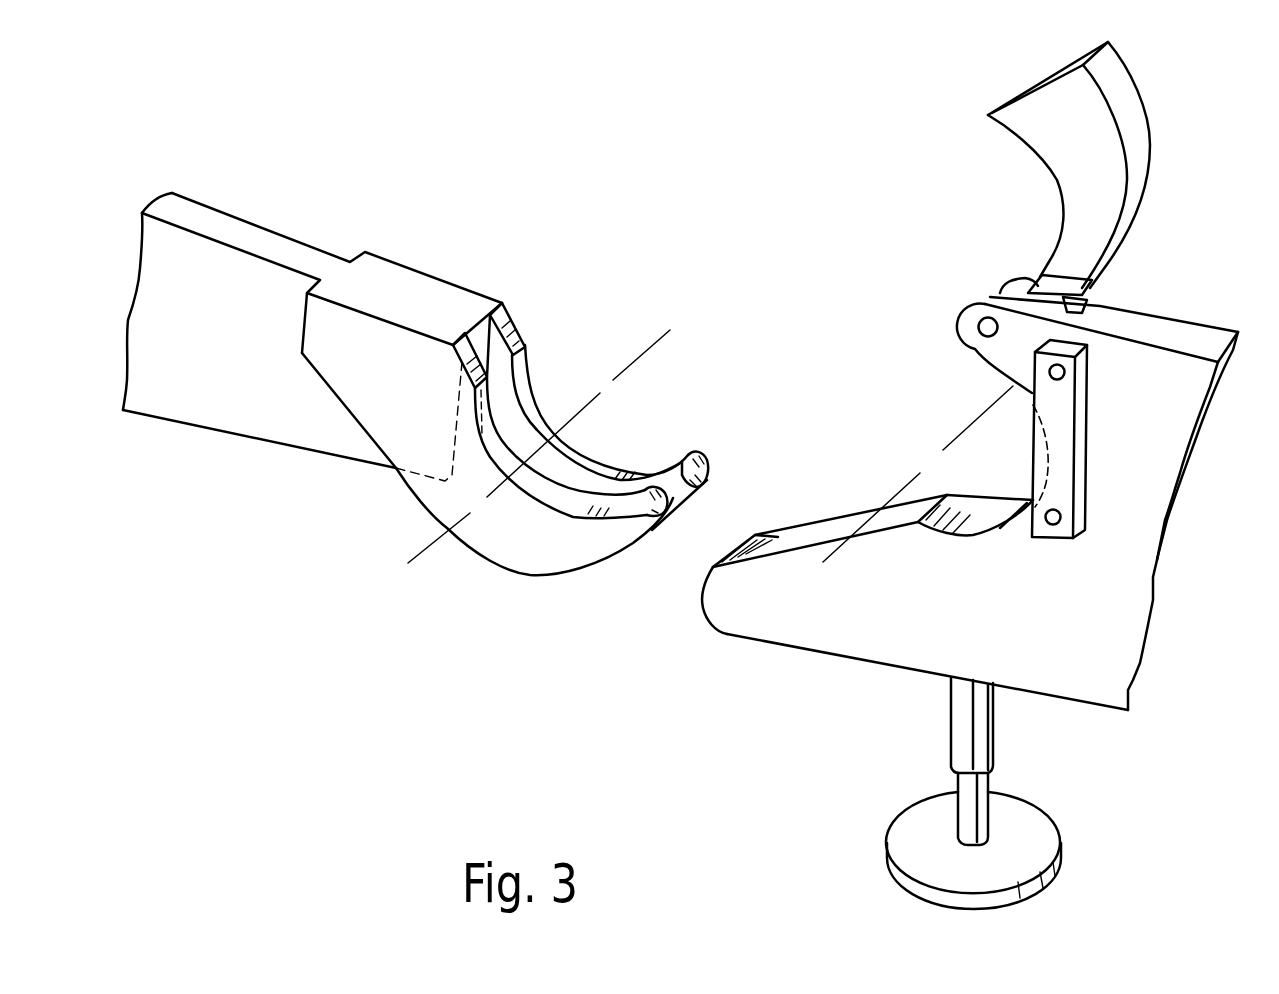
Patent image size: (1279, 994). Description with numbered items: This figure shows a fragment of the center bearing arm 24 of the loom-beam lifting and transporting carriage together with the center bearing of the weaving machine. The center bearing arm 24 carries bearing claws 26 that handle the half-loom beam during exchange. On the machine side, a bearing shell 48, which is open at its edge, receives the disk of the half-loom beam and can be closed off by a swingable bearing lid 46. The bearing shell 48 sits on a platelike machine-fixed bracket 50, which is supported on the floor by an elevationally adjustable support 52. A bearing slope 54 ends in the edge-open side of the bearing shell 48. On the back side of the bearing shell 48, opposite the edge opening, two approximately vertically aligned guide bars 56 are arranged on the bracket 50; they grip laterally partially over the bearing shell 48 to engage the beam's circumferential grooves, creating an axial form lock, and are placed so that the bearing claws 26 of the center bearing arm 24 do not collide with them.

The center bearing arm 24 is at (230, 278).
The bearing claws 26 is at (675, 480).
The bearing lid 46 is at (1093, 162).
The bearing shell 48 is at (970, 512).
The bracket 50 is at (1092, 600).
The support 52 is at (970, 737).
The bearing slope 54 is at (815, 535).
The guide bars 56 is at (1060, 425).